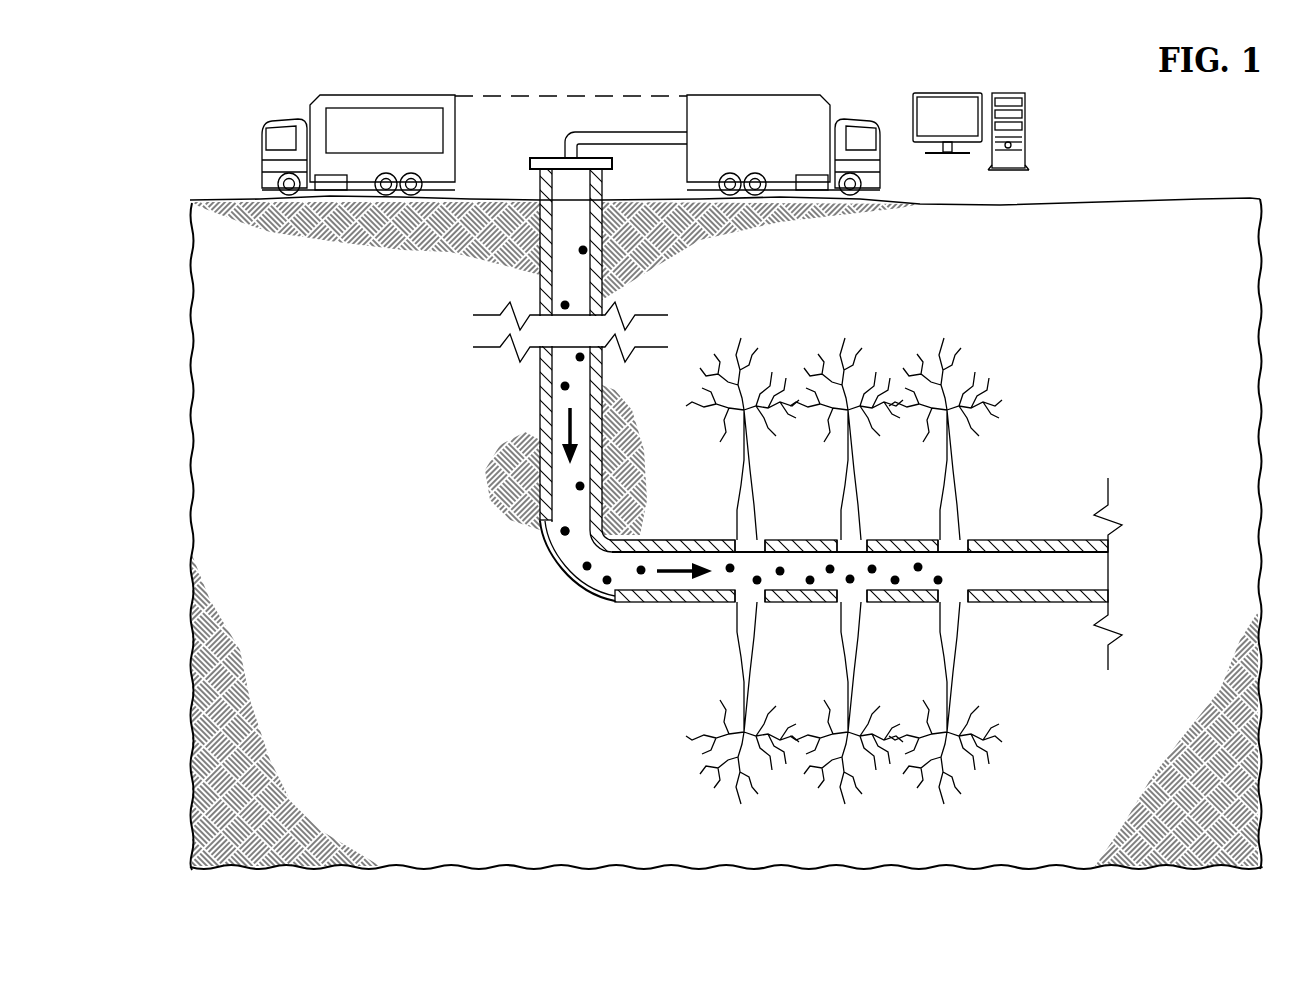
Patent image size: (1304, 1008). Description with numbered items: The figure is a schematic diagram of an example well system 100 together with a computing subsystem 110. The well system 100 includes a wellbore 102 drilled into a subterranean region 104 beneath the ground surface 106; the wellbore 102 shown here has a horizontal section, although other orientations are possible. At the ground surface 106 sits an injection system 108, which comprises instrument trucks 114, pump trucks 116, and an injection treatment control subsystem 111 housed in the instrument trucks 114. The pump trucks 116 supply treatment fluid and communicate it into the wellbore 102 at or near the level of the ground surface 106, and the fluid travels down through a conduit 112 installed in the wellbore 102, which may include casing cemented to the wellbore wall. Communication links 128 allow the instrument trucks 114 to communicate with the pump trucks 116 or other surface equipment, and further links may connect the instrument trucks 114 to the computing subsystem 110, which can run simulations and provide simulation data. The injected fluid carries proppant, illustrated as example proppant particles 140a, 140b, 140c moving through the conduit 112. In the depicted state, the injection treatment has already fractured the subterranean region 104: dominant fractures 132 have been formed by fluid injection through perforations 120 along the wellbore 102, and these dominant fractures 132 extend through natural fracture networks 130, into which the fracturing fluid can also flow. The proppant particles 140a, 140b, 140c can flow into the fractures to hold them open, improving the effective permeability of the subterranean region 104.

The well system 100 is at (416, 648).
The wellbore 102 is at (682, 598).
The subterranean region 104 is at (727, 291).
The ground surface 106 is at (1062, 204).
The injection system 108 is at (530, 123).
The computing subsystem 110 is at (990, 84).
The injection treatment control subsystem 111 is at (406, 142).
The conduit 112 is at (540, 418).
The instrument trucks 114 is at (358, 123).
The pump trucks 116 is at (757, 95).
The perforations 120 is at (752, 532).
The communication links 128 is at (552, 95).
The natural fracture networks 130 is at (858, 556).
The dominant fractures 132 is at (752, 462).
The proppant particle 140a is at (548, 535).
The proppant particle 140b is at (575, 578).
The proppant particle 140c is at (604, 600).